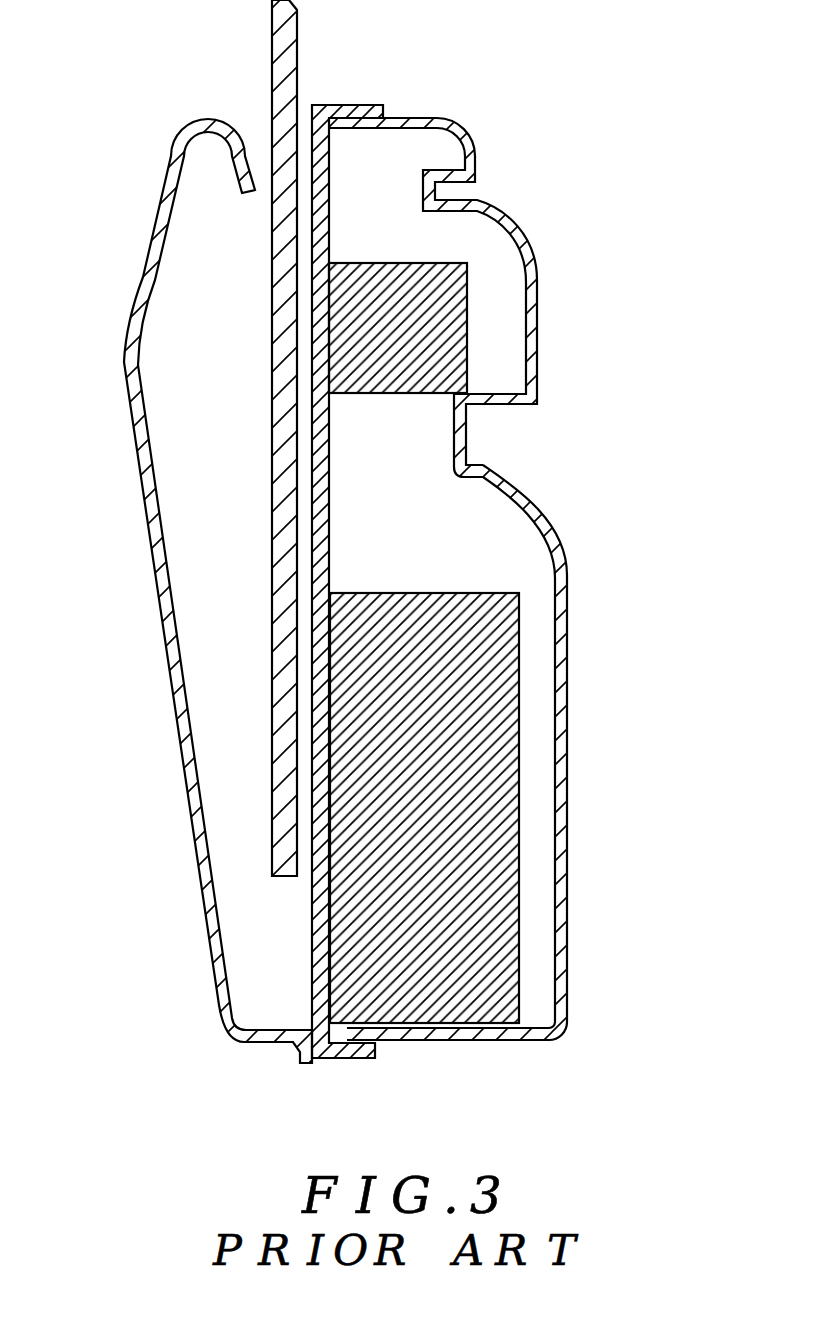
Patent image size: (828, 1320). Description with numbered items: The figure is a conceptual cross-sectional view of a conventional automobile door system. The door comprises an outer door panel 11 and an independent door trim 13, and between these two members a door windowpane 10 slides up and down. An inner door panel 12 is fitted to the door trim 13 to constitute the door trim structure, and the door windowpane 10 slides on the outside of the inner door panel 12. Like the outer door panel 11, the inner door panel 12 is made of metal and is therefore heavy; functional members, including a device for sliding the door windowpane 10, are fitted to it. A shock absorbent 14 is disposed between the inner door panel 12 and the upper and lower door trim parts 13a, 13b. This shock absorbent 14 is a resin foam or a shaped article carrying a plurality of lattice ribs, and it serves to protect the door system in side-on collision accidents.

The door windowpane 10 is at (298, 40).
The outer door panel 11 is at (143, 272).
The inner door panel 12 is at (312, 905).
The door trim 13 is at (513, 579).
The upper door trim part 13a is at (540, 299).
The lower door trim part 13b is at (568, 645).
The shock absorbent 14 is at (383, 380).